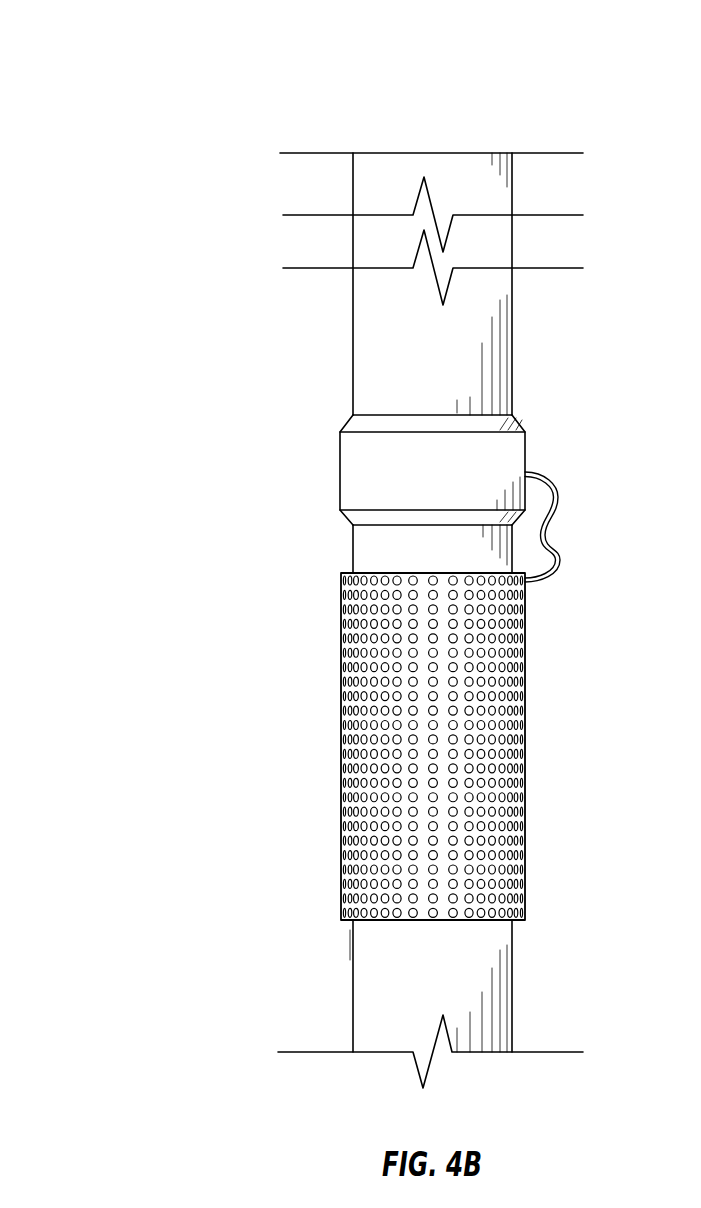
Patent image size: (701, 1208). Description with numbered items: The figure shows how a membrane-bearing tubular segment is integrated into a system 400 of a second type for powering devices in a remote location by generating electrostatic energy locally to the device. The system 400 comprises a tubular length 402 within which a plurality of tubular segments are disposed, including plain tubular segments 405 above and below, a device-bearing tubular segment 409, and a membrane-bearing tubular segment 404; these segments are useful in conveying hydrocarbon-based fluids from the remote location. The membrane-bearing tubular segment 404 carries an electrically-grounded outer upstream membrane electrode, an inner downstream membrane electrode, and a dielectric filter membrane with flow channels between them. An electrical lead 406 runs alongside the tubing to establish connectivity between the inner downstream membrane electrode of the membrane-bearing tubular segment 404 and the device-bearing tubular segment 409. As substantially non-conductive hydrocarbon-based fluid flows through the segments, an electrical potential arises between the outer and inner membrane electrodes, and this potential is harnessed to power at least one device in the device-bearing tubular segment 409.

The system 400 is at (182, 91).
The tubular length 402 is at (138, 155).
The membrane-bearing tubular segment 404 is at (525, 667).
The tubular segment 405 is at (455, 353).
The electrical lead 406 is at (540, 586).
The device-bearing tubular segment 409 is at (455, 483).